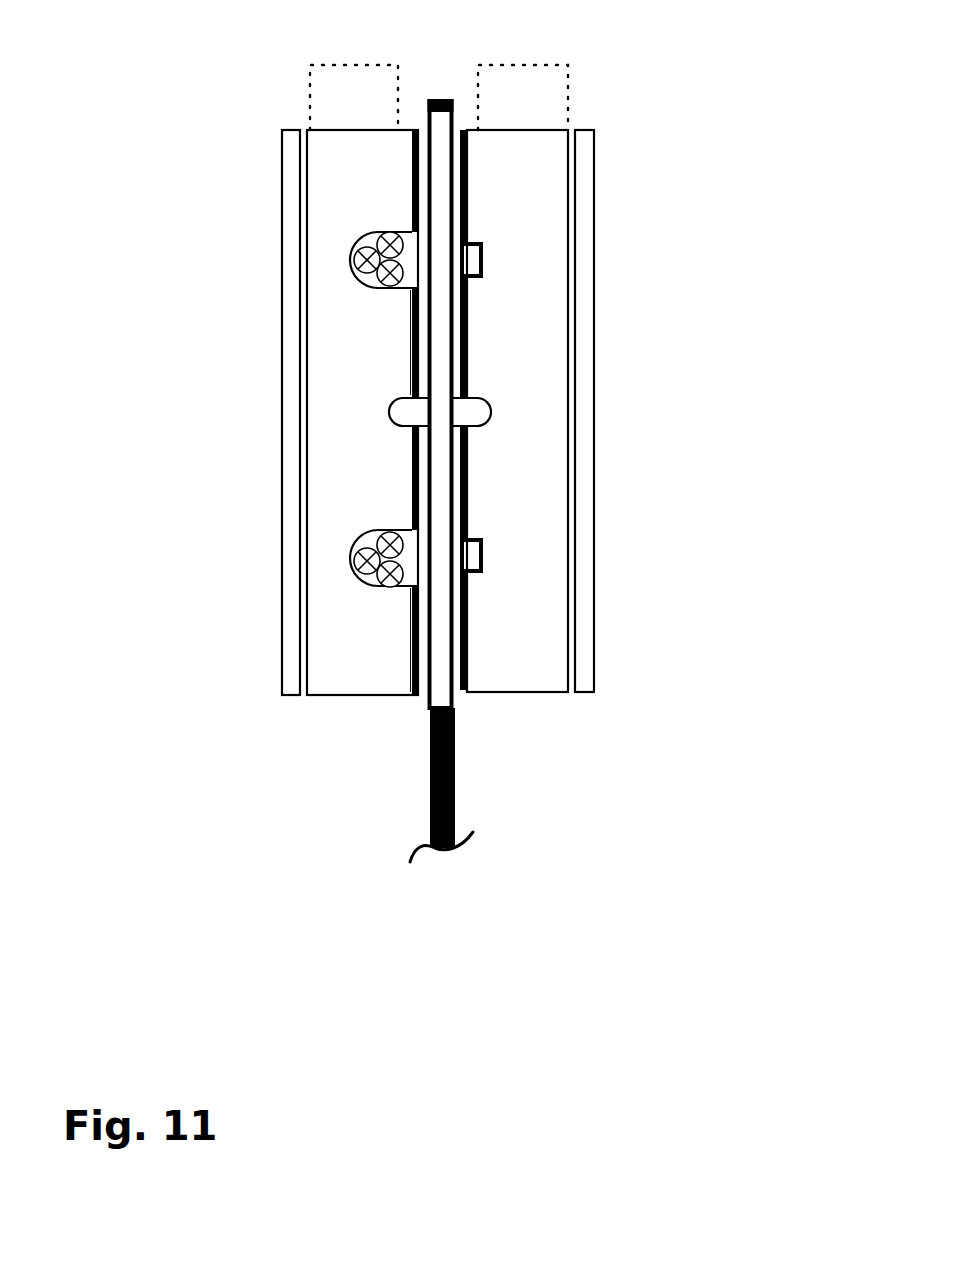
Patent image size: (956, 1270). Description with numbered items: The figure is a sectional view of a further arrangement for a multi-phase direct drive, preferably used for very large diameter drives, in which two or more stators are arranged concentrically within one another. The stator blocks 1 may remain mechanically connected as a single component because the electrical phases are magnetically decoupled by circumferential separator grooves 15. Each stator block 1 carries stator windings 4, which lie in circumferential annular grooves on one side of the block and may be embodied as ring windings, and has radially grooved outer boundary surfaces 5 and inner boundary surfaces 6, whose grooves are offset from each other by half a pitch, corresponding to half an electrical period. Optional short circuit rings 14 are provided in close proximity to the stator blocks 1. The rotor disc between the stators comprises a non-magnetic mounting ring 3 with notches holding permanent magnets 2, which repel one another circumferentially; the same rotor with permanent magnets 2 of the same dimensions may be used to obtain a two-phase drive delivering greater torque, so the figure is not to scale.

The stator block 1 is at (392, 145).
The permanent magnets 2 is at (442, 195).
The mounting ring 3 is at (430, 752).
The stator windings 4 is at (388, 246).
The radially grooved outer boundary surfaces 5 is at (408, 195).
The radially grooved inner boundary surfaces 6 is at (410, 337).
The short circuit rings 14 is at (287, 225).
The circumferential separator grooves 15 is at (405, 410).